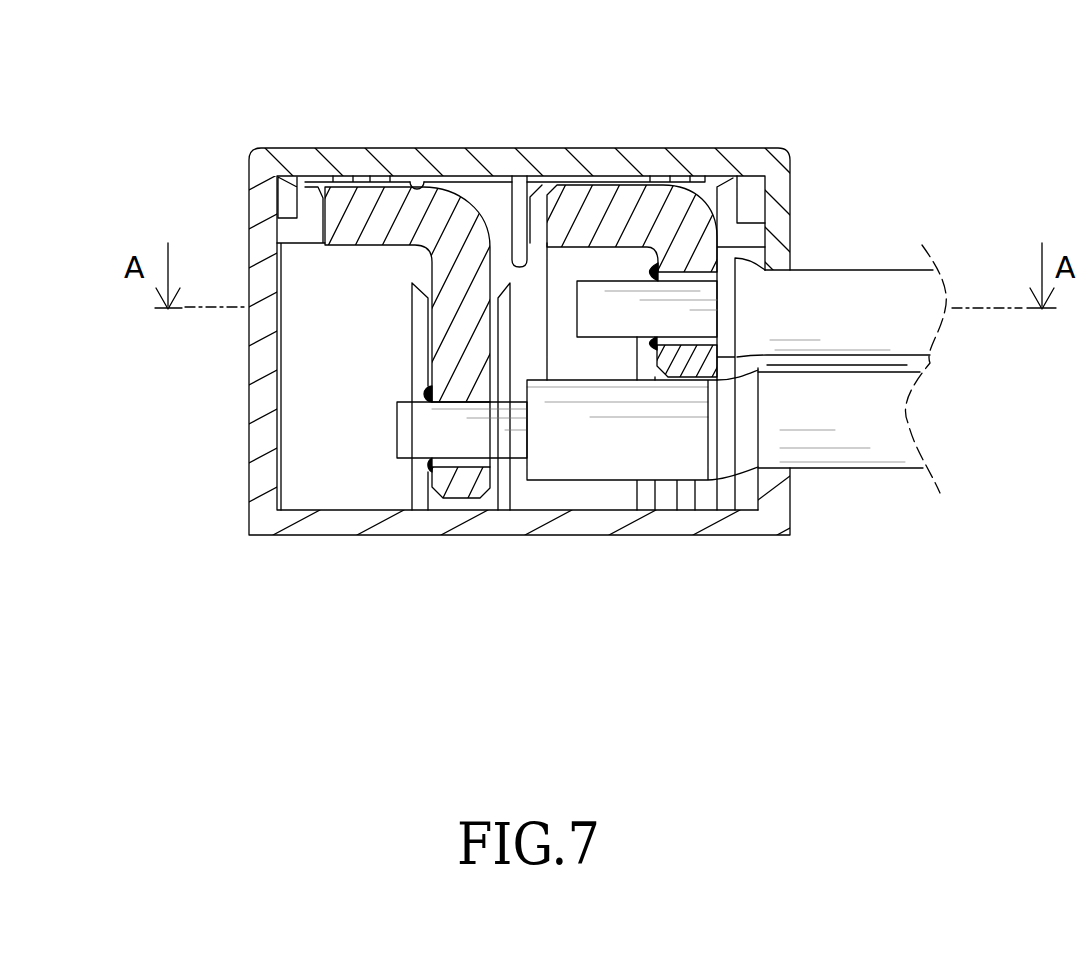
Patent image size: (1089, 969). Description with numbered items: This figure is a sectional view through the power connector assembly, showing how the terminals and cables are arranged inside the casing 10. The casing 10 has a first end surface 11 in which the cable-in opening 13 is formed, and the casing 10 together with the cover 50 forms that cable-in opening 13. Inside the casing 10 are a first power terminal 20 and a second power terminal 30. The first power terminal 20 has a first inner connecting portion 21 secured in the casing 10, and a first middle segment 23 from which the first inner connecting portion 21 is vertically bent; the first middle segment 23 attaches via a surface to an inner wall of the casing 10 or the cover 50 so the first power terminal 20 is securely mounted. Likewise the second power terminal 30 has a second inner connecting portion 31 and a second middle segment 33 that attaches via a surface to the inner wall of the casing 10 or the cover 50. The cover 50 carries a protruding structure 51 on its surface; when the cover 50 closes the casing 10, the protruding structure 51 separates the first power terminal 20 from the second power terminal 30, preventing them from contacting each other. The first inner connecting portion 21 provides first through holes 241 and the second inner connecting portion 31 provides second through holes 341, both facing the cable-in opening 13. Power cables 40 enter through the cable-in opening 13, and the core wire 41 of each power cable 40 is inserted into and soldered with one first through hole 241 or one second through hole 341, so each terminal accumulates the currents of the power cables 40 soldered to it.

The casing 10 is at (805, 521).
The first end surface 11 is at (790, 205).
The cable-in opening 13 is at (778, 467).
The first power terminal 20 is at (662, 182).
The first inner connecting portion 21 is at (697, 363).
The first middle segment 23 is at (605, 200).
The first through hole 241 is at (688, 336).
The second power terminal 30 is at (356, 177).
The second inner connecting portion 31 is at (477, 490).
The second middle segment 33 is at (357, 220).
The second through hole 341 is at (478, 490).
The power cable 40 is at (894, 396).
The core wire 41 is at (440, 430).
The cover 50 is at (557, 135).
The protruding structure 51 is at (517, 217).